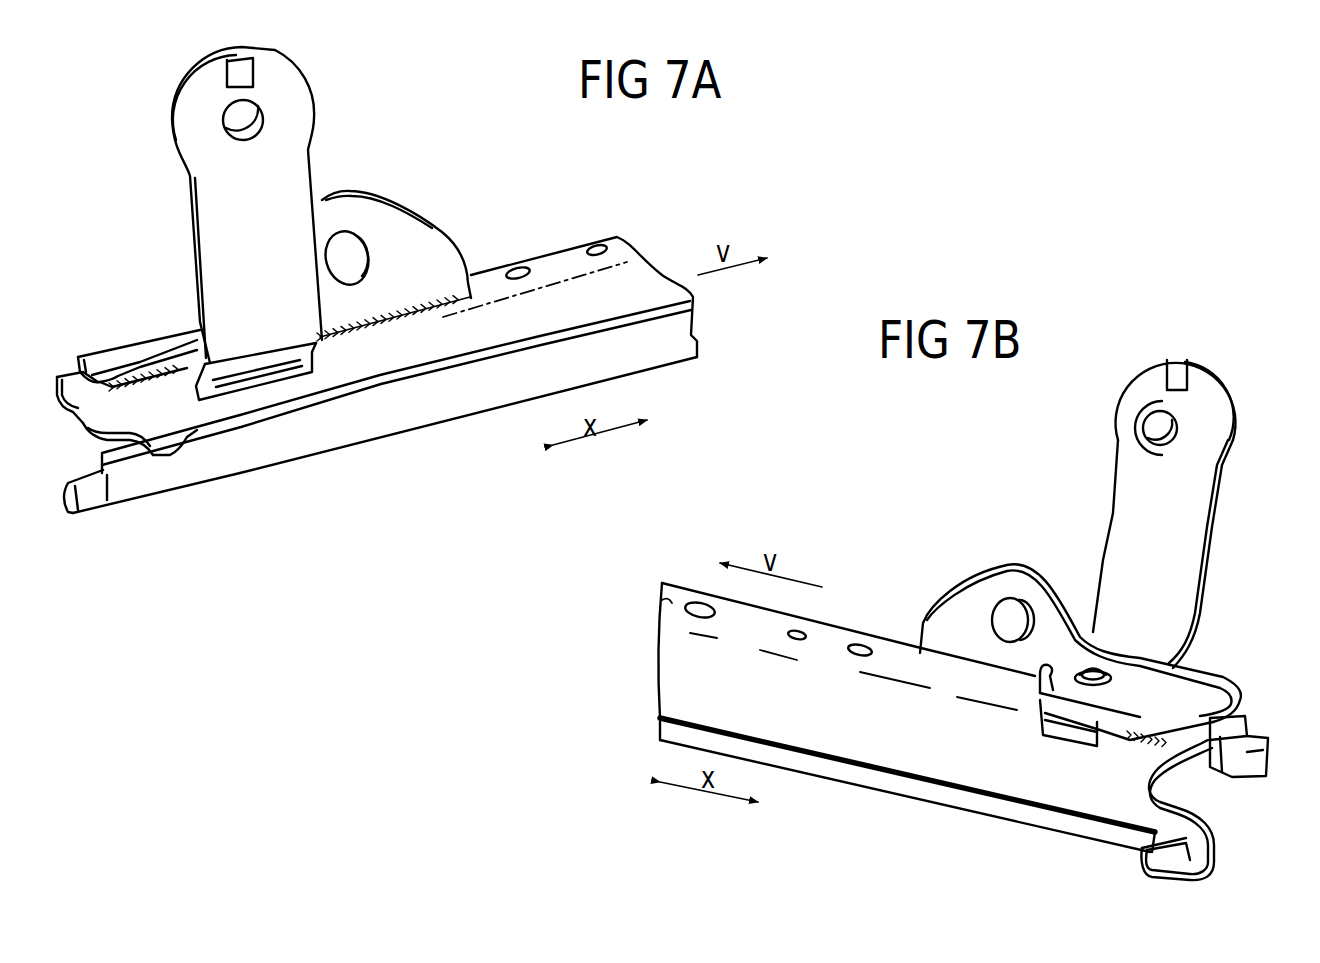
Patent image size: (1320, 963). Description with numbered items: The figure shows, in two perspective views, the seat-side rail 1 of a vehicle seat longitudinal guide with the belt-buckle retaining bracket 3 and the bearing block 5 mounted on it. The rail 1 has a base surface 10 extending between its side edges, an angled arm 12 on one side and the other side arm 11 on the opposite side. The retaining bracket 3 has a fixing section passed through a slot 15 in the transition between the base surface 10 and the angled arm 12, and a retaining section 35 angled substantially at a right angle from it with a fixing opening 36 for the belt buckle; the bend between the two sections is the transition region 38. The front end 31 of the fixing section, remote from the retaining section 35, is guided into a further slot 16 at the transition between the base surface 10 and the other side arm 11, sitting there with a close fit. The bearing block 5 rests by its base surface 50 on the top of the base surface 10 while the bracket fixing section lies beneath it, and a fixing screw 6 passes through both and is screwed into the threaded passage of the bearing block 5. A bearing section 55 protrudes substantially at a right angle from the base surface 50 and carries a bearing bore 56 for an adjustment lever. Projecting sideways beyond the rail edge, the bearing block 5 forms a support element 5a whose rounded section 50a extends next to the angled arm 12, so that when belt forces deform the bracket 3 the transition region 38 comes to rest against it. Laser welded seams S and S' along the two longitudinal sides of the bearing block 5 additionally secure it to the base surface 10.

In FIG. 7A, the seat-side rail 1 is at (620, 232).
In FIG. 7B, the seat-side rail 1 is at (973, 822).
In FIG. 7A, the retaining bracket 3 is at (313, 143).
In FIG. 7B, the retaining bracket 3 is at (1224, 488).
In FIG. 7A, the bearing block 5 is at (438, 222).
In FIG. 7B, the bearing block 5 is at (978, 580).
In FIG. 7A, the support element 5a is at (155, 343).
In FIG. 7B, the support element 5a is at (1212, 672).
In FIG. 7B, the fixing screw 6 is at (1092, 668).
In FIG. 7A, the base surface 10 is at (72, 418).
In FIG. 7B, the base surface 10 is at (1218, 737).
In FIG. 7A, the other side arm 11 is at (58, 404).
In FIG. 7B, the other side arm 11 is at (1200, 790).
In FIG. 7A, the angled arm 12 is at (85, 442).
In FIG. 7B, the angled arm 12 is at (1244, 733).
In FIG. 7A, the slot 15 is at (288, 383).
In FIG. 7B, the further slot 16 is at (1095, 747).
In FIG. 7B, the front end 31 is at (1076, 738).
In FIG. 7A, the retaining section 35 is at (212, 211).
In FIG. 7B, the retaining section 35 is at (1217, 430).
In FIG. 7A, the fixing opening 36 is at (232, 115).
In FIG. 7B, the fixing opening 36 is at (1168, 424).
In FIG. 7A, the transition region 38 is at (305, 352).
In FIG. 7A, the base surface 50 is at (90, 355).
In FIG. 7B, the base surface 50 is at (1150, 688).
In FIG. 7B, the rounded section 50a is at (1244, 686).
In FIG. 7A, the bearing section 55 is at (440, 260).
In FIG. 7B, the bearing section 55 is at (940, 622).
In FIG. 7A, the bearing bore 56 is at (350, 243).
In FIG. 7B, the bearing bore 56 is at (1012, 615).
In FIG. 7A, the welded seam S is at (146, 469).
In FIG. 7B, the additional welded seam S' is at (1133, 827).